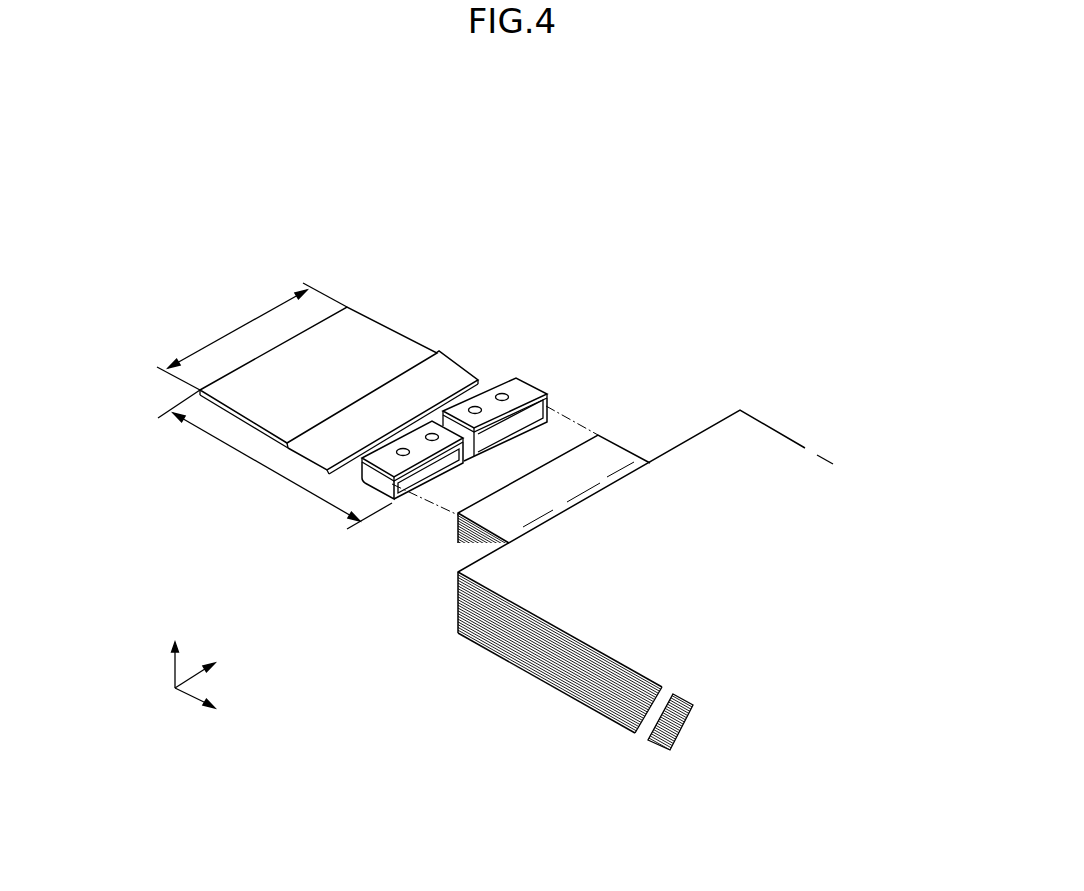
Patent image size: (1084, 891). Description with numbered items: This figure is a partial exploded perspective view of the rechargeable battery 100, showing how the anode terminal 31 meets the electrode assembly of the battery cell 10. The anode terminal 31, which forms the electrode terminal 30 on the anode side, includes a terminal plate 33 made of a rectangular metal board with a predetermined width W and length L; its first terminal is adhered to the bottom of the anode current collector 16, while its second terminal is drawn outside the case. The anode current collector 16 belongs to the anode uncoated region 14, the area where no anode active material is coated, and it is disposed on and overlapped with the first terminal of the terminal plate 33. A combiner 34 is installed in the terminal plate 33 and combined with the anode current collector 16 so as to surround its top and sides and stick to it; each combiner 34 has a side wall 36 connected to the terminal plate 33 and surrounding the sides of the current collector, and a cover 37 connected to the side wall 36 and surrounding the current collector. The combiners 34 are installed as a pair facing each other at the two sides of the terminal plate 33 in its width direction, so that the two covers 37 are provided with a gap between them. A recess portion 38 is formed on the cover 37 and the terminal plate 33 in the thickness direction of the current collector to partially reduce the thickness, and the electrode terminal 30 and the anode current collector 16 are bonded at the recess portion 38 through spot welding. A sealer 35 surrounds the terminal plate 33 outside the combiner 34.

The battery module 100 is at (481, 134).
The battery cell 10 is at (772, 414).
The anode uncoated region 14 is at (645, 460).
The anode current collector 16 is at (612, 444).
The electrode terminal 30 is at (357, 340).
The anode terminal 31 is at (401, 300).
The terminal plate 33 is at (357, 320).
The sealer 35 is at (450, 353).
The combiner 34 is at (556, 293).
The side wall 36 is at (385, 481).
The cover 37 is at (432, 441).
The recess portion 38 is at (502, 395).